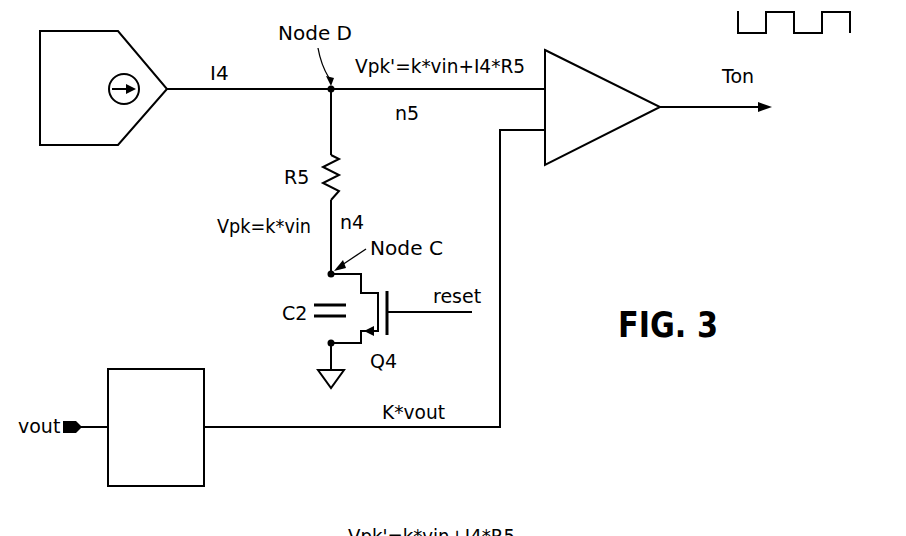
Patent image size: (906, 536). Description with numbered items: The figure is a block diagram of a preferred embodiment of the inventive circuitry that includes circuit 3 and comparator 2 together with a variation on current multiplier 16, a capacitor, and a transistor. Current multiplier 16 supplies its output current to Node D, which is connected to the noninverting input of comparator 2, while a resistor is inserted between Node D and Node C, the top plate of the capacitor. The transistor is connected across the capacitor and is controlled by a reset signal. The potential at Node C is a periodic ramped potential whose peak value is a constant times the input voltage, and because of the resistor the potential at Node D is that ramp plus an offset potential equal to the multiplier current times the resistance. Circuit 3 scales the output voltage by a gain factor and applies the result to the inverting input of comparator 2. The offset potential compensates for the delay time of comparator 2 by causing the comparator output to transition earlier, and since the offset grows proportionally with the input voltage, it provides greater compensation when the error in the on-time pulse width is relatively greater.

The current multiplier 16 is at (73, 146).
The comparator 2 is at (602, 78).
The circuit 3 is at (160, 487).